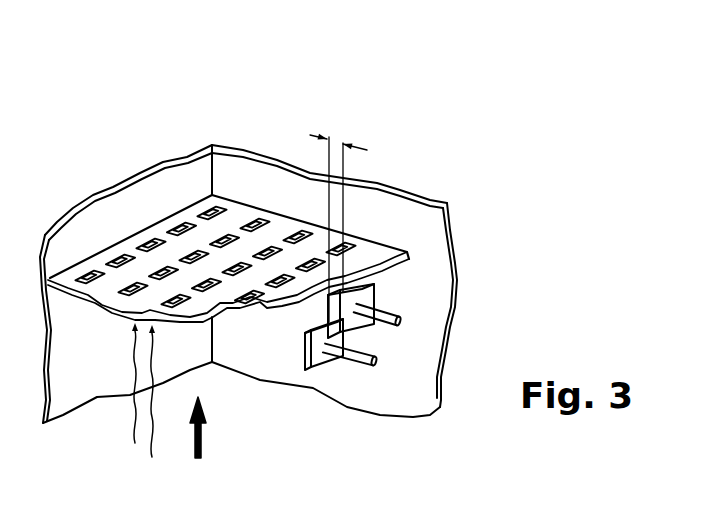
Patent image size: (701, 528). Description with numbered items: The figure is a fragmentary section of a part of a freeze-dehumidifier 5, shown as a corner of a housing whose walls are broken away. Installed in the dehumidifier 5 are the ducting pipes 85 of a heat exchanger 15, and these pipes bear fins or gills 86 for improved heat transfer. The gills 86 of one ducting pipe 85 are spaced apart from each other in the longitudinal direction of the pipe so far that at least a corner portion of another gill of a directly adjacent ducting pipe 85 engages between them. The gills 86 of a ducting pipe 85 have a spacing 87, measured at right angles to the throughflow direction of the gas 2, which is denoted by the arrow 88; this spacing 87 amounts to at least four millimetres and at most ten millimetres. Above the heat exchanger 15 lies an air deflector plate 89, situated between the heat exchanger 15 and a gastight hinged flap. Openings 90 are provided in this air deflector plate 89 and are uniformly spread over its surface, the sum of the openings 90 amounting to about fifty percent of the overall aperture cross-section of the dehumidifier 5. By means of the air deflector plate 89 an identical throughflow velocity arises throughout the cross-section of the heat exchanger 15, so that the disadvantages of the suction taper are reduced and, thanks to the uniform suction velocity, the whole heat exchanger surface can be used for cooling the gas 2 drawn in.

The gas 2 is at (119, 360).
The freeze-dehumidifier 5 is at (420, 167).
The heat exchanger 15 is at (435, 345).
The ducting pipes 85 is at (388, 324).
The fins or gills 86 is at (372, 291).
The spacing 87 is at (335, 138).
The arrow 88 is at (203, 438).
The air deflector plate 89 is at (238, 214).
The openings 90 is at (147, 240).